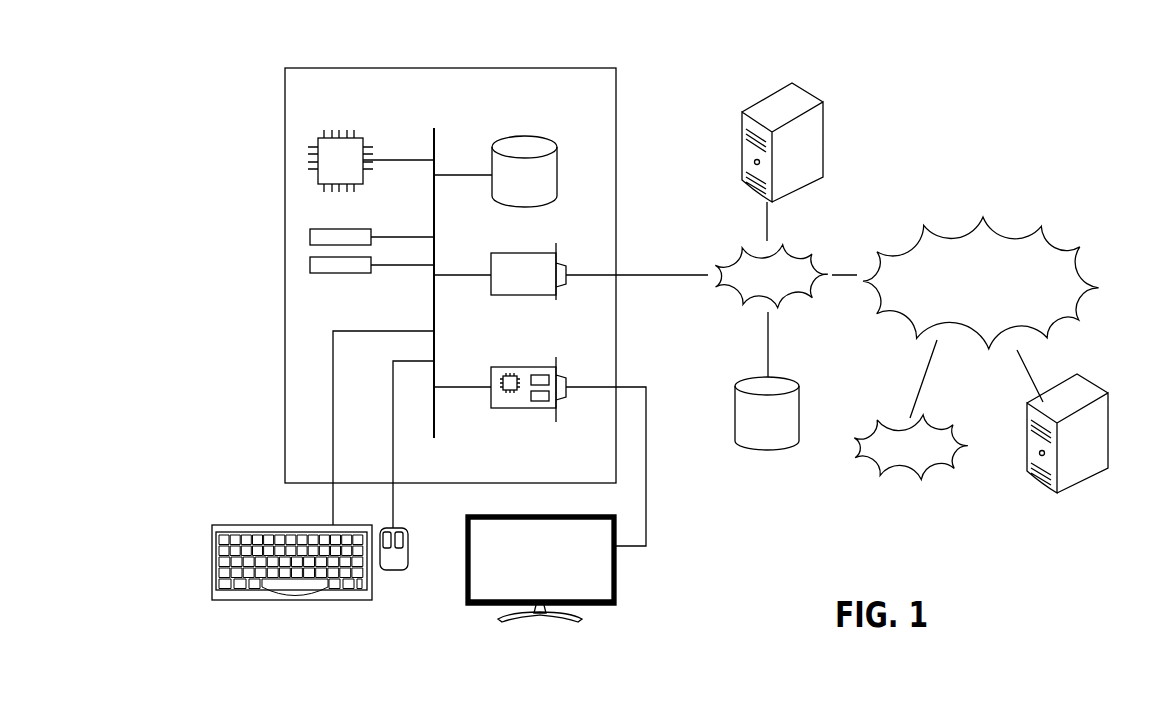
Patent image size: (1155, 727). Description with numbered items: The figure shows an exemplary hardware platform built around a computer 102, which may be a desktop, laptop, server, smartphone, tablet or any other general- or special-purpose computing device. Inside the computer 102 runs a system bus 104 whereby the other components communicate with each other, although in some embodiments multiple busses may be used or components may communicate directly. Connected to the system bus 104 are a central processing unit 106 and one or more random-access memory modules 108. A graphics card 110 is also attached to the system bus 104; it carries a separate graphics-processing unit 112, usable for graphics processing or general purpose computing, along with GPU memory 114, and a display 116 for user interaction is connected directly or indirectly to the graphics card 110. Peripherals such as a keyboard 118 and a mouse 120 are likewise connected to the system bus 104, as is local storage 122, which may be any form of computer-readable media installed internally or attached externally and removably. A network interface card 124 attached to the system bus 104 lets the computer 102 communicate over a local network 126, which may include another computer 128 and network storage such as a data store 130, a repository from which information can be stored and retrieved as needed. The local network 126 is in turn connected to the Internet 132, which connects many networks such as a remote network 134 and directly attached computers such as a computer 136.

The computer 102 is at (578, 68).
The system bus 104 is at (436, 130).
The central processing unit 106 is at (358, 133).
The random-access memory modules 108 is at (372, 263).
The graphics card 110 is at (522, 394).
The graphics-processing unit 112 is at (508, 392).
The GPU memory 114 is at (538, 402).
The display 116 is at (618, 590).
The keyboard 118 is at (292, 601).
The mouse 120 is at (394, 573).
The local storage 122 is at (559, 160).
The network interface card 124 is at (490, 260).
The local network 126 is at (818, 248).
The computer 128 is at (820, 100).
The data store 130 is at (800, 384).
The Internet 132 is at (1022, 216).
The remote network 134 is at (960, 418).
The computer 136 is at (1085, 378).